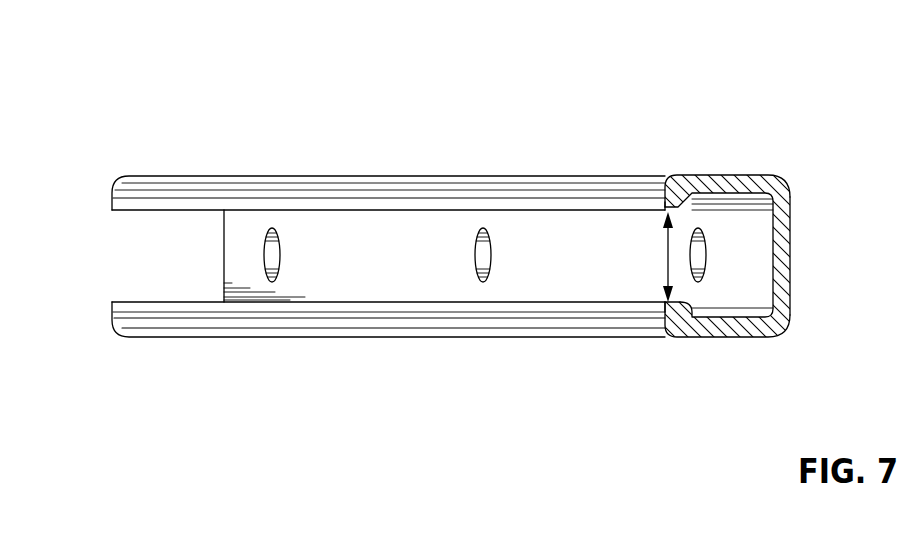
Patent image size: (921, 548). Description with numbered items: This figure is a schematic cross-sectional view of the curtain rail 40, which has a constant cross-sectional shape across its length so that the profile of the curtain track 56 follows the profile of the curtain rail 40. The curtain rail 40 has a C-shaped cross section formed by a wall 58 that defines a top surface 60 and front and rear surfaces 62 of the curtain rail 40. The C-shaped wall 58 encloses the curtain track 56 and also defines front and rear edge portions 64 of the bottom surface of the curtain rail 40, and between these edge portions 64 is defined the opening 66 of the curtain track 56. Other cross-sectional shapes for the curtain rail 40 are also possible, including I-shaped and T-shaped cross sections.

The curtain rail 40 is at (715, 113).
The curtain track 56 is at (760, 258).
The wall 58 is at (705, 175).
The top surface 60 is at (790, 215).
The front and rear surfaces 62 is at (761, 175).
The front and rear edge portions 64 is at (663, 205).
The opening 66 is at (670, 248).